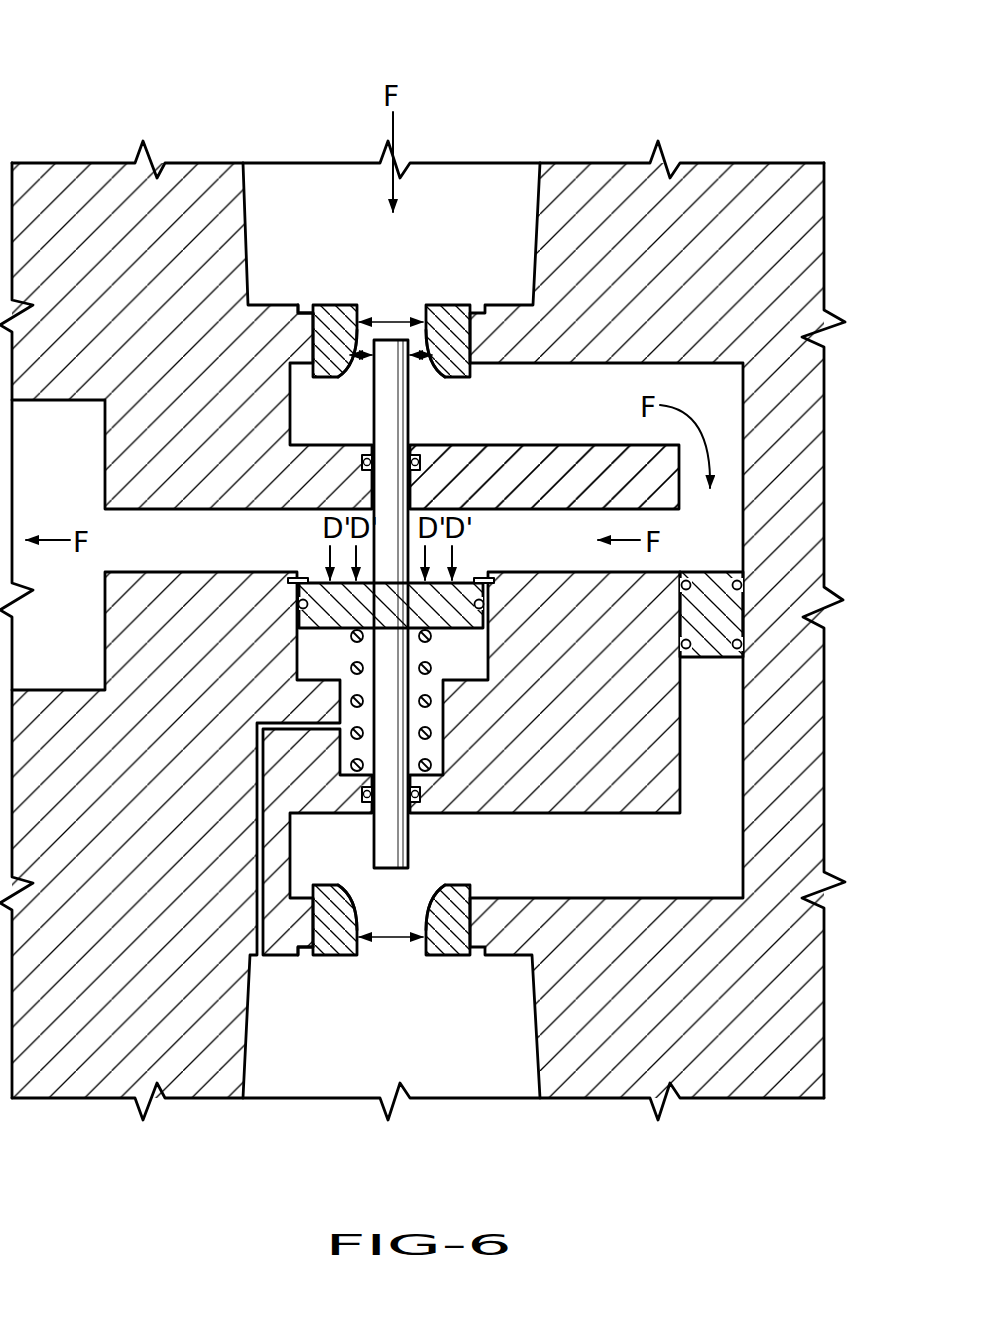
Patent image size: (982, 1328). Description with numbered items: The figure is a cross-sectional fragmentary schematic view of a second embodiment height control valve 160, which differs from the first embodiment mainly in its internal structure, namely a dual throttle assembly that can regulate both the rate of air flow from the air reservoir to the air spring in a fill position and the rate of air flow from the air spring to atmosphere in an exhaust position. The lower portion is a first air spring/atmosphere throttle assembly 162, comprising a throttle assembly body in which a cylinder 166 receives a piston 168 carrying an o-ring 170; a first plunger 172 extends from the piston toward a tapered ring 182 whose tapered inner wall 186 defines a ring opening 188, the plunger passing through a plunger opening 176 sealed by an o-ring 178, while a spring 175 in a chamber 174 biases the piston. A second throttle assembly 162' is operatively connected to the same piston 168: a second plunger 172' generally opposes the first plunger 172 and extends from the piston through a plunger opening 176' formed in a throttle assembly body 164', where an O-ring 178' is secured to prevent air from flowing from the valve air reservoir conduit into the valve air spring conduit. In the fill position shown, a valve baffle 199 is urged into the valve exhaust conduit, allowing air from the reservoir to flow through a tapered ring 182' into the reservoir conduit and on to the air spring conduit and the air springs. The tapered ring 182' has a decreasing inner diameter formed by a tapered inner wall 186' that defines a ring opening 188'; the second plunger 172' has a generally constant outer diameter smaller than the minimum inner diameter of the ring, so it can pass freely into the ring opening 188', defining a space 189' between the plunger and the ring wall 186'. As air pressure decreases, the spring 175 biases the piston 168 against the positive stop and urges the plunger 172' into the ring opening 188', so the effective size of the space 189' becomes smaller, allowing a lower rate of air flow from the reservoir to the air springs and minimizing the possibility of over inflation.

The height control valve 160 is at (422, 563).
The first air spring/atmosphere throttle assembly 162 is at (288, 1005).
The second throttle assembly 162' is at (281, 257).
The throttle assembly body 164' is at (377, 630).
The cylinder 166 is at (302, 577).
The piston 168 is at (413, 620).
The o-ring 170 is at (484, 604).
The first plunger 172 is at (313, 604).
The second plunger 172' is at (537, 477).
The chamber 174 is at (432, 740).
The spring 175 is at (432, 701).
The plunger opening 176 is at (333, 819).
The plunger opening 176' is at (438, 442).
The o-ring 178 is at (461, 819).
The O-ring 178' is at (309, 465).
The tapered ring 182 is at (416, 986).
The tapered ring 182' is at (426, 276).
The tapered inner wall 186 is at (392, 950).
The tapered inner wall 186' is at (399, 314).
The ring opening 188 is at (396, 992).
The ring opening 188' is at (403, 272).
The space 189' is at (420, 401).
The valve baffle 199 is at (712, 600).